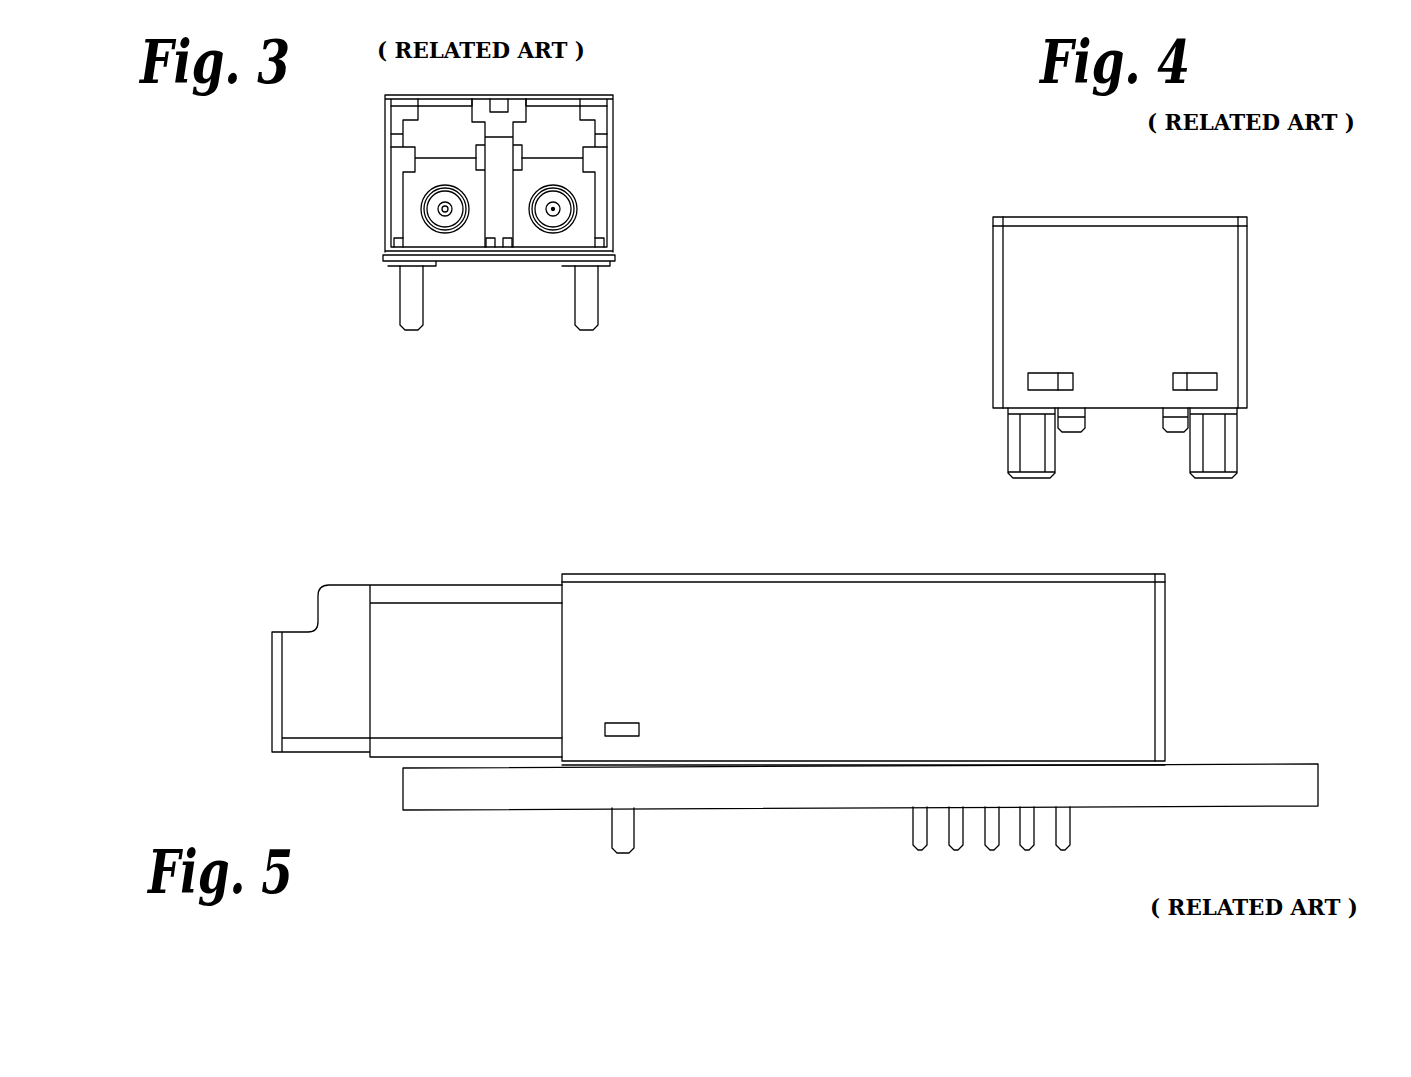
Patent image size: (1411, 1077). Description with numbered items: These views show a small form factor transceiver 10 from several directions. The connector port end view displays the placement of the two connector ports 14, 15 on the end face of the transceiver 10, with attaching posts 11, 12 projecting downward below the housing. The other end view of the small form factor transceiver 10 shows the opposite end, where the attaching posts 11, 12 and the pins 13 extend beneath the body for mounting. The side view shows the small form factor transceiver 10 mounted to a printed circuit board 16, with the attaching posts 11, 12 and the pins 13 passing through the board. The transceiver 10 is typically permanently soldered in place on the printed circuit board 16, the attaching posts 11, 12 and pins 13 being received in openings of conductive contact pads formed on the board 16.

In FIG. 4, the small form factor transceiver 10 is at (1117, 217).
In FIG. 5, the small form factor transceiver 10 is at (806, 574).
In FIG. 3, the attaching post 11 is at (398, 293).
In FIG. 4, the attaching post 11 is at (1237, 448).
In FIG. 3, the attaching post 12 is at (600, 302).
In FIG. 4, the attaching post 12 is at (1008, 437).
In FIG. 4, the pins 13 is at (1010, 459).
In FIG. 3, the connector port 14 is at (437, 207).
In FIG. 3, the connector port 15 is at (558, 207).
In FIG. 5, the printed circuit board 16 is at (427, 812).